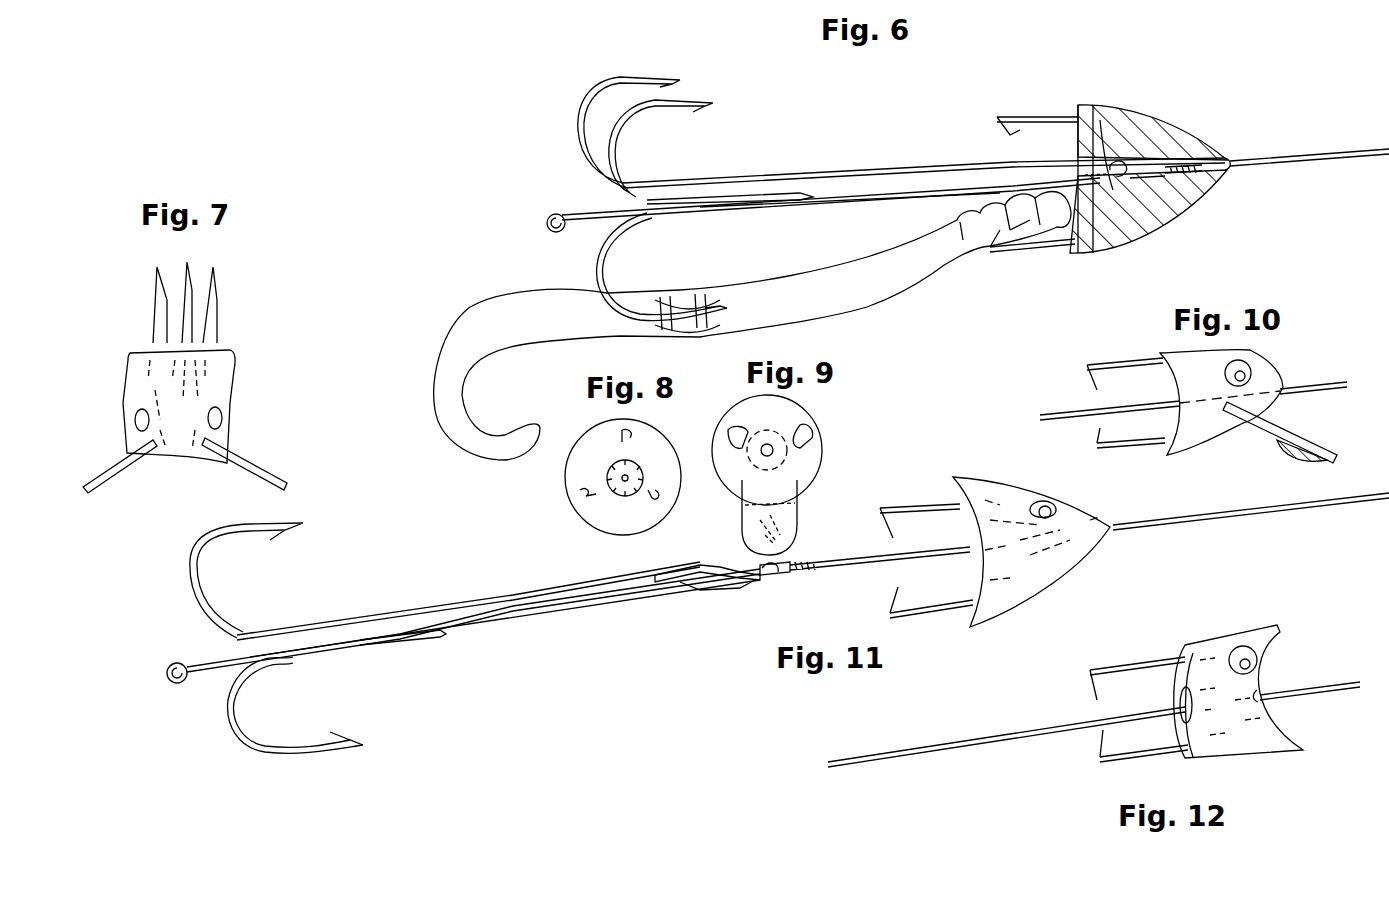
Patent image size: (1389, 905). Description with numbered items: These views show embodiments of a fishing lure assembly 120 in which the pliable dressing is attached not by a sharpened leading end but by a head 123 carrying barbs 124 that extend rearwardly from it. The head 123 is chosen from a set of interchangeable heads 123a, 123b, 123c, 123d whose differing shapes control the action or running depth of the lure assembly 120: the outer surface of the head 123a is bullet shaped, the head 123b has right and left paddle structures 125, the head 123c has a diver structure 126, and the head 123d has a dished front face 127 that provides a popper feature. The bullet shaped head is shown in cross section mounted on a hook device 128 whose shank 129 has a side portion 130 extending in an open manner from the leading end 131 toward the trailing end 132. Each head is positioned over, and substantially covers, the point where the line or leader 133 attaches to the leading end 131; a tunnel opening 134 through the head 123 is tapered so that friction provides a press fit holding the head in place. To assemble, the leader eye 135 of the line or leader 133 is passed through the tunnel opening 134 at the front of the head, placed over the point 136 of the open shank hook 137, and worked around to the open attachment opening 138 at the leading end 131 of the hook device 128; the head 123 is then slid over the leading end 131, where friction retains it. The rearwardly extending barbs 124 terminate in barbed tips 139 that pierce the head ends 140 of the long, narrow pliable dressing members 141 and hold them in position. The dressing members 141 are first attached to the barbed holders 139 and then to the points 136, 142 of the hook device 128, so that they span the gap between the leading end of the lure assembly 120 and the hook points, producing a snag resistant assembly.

In FIG. 6, the fishing lure assembly 120 is at (818, 110).
In FIG. 11, the fishing lure assembly 120 is at (538, 690).
In FIG. 6, the head 123 is at (1152, 97).
In FIG. 6, the bullet shaped head 123a is at (1210, 130).
In FIG. 11, the bullet shaped head 123a is at (1080, 568).
In FIG. 7, the head having right and left paddle structures 123b is at (235, 392).
In FIG. 8, the head having a diver structure 123c is at (590, 520).
In FIG. 9, the head having a diver structure 123c is at (822, 450).
In FIG. 10, the head having a diver structure 123c is at (1270, 372).
In FIG. 12, the head having a dished front face 123d is at (1248, 630).
In FIG. 6, the barbs 124 is at (1043, 105).
In FIG. 10, the barbs 124 is at (1105, 360).
In FIG. 11, the barbs 124 is at (905, 507).
In FIG. 12, the barbs 124 is at (1095, 665).
In FIG. 7, the paddle structures 125 is at (262, 462).
In FIG. 9, the diver structure 126 is at (798, 510).
In FIG. 10, the diver structure 126 is at (1298, 442).
In FIG. 12, the dished front face 127 is at (1292, 722).
In FIG. 6, the hook device 128 is at (770, 205).
In FIG. 11, the hook device 128 is at (400, 642).
In FIG. 6, the shank 129 is at (878, 200).
In FIG. 11, the shank 129 is at (500, 617).
In FIG. 6, the side portion 130 is at (860, 165).
In FIG. 11, the side portion 130 is at (360, 615).
In FIG. 6, the leading end 131 is at (1113, 163).
In FIG. 11, the leading end 131 is at (760, 565).
In FIG. 6, the trailing end 132 is at (555, 212).
In FIG. 11, the trailing end 132 is at (172, 665).
In FIG. 6, the line or leader 133 is at (1245, 172).
In FIG. 11, the line or leader 133 is at (1128, 525).
In FIG. 6, the tunnel opening 134 is at (1183, 193).
In FIG. 6, the leader eye 135 is at (1127, 165).
In FIG. 11, the leader eye 135 is at (795, 575).
In FIG. 6, the point 136 is at (660, 72).
In FIG. 11, the point 136 is at (303, 525).
In FIG. 6, the open shank hook 137 is at (578, 110).
In FIG. 11, the open shank hook 137 is at (200, 577).
In FIG. 6, the open attachment opening 138 is at (1100, 120).
In FIG. 11, the open attachment opening 138 is at (735, 580).
In FIG. 6, the barbed tips 139 is at (1000, 128).
In FIG. 11, the barbed tips 139 is at (893, 525).
In FIG. 6, the head ends 140 is at (1035, 250).
In FIG. 6, the pliable dressing members 141 is at (893, 296).
In FIG. 6, the point 142 is at (710, 300).
In FIG. 11, the point 142 is at (350, 752).